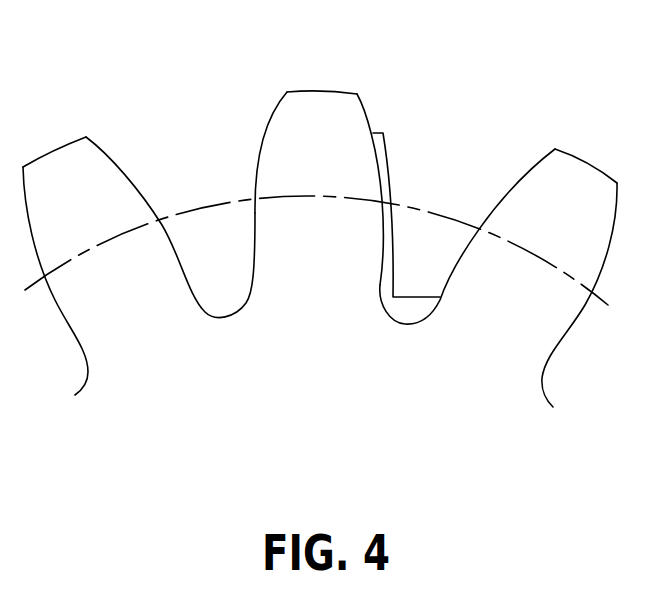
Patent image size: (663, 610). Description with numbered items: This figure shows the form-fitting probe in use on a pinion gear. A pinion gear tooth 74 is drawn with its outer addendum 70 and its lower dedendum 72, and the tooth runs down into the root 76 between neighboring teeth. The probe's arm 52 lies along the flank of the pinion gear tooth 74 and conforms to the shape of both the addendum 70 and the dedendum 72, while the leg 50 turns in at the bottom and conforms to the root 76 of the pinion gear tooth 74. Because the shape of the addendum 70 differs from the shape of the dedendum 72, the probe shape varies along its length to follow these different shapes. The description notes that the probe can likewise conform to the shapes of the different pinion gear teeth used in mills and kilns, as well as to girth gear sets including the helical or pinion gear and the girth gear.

The addendum 70 is at (329, 158).
The pinion gear tooth 74 is at (307, 108).
The dedendum 72 is at (255, 235).
The root 76 is at (232, 317).
The arm 52 is at (388, 155).
The leg 50 is at (412, 307).